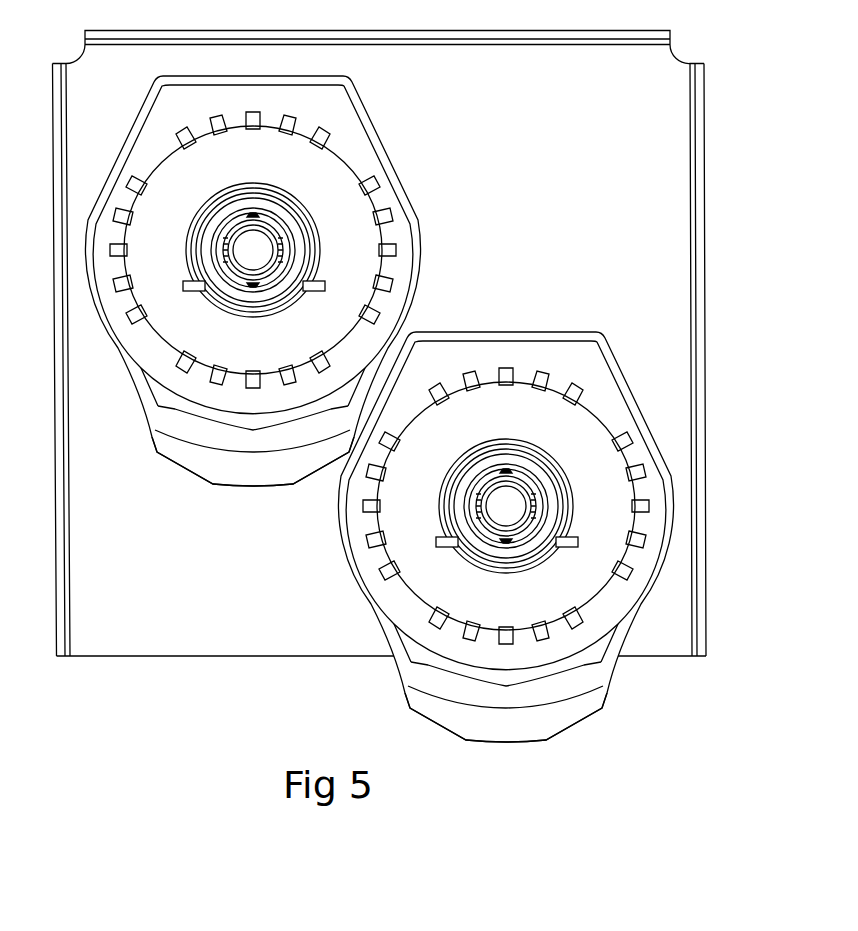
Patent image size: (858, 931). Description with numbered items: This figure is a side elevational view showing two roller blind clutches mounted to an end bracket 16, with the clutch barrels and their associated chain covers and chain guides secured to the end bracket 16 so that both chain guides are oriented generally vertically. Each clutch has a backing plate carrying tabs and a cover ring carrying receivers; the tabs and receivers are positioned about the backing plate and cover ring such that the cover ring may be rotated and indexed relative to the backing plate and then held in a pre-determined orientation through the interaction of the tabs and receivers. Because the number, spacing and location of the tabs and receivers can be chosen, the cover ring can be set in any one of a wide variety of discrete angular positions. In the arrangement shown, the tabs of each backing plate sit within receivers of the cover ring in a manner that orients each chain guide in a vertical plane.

The end bracket 16 is at (658, 353).